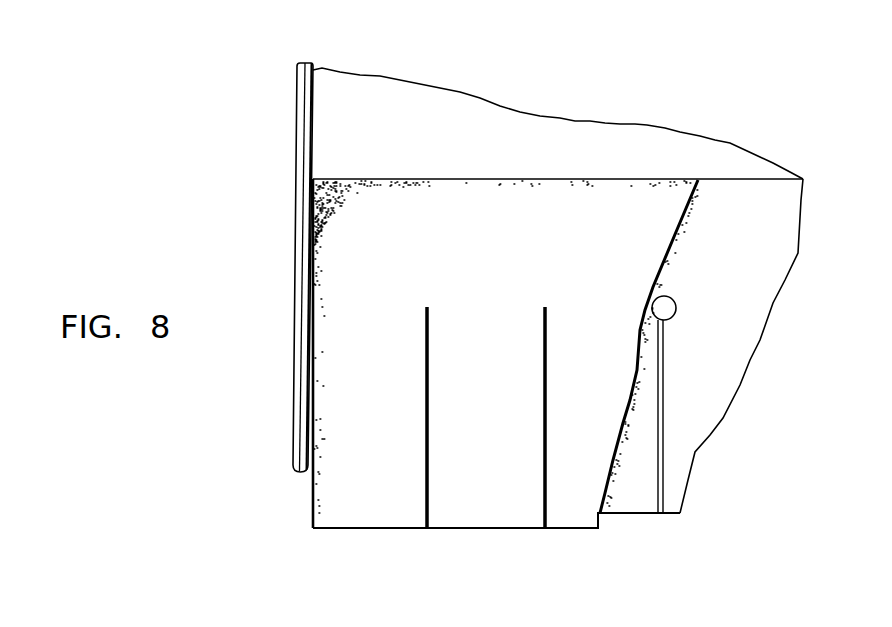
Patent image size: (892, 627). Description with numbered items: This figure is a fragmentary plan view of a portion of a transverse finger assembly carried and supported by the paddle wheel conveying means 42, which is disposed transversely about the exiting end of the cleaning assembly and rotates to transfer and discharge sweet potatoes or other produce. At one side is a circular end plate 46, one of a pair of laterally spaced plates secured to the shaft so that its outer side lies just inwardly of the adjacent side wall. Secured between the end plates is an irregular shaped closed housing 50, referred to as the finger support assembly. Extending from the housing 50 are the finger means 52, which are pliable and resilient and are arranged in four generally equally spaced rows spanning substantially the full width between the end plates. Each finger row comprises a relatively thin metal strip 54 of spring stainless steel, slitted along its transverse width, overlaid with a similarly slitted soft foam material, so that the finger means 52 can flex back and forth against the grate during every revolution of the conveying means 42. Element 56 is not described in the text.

The paddle wheel conveying means 42 is at (268, 193).
The circular end plate 46 is at (298, 127).
The finger support assembly housing 50 is at (527, 133).
The finger means 52 is at (389, 272).
The thin metal strip 54 is at (695, 452).
The base wall 56 is at (340, 495).